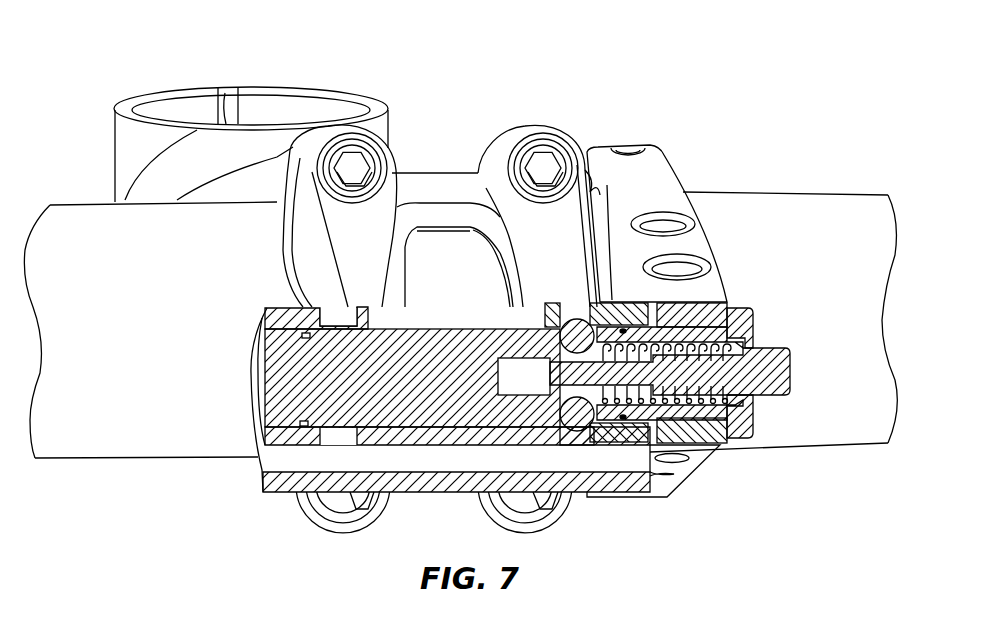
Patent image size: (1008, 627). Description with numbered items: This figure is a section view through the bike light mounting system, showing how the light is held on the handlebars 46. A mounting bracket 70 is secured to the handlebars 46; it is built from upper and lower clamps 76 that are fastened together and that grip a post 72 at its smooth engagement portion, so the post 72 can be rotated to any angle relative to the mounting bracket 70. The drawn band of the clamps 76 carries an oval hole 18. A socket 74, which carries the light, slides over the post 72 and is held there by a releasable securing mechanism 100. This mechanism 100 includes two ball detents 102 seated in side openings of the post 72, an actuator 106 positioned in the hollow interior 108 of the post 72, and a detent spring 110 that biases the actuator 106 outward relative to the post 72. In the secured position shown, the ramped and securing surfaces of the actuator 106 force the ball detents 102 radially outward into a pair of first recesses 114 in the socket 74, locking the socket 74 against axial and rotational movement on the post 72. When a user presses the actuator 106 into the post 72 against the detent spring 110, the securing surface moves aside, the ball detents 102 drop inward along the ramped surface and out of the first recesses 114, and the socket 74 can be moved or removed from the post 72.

The oval hole in band 18 is at (683, 233).
The handlebars 46 is at (783, 207).
The mounting bracket 70 is at (661, 130).
The post 72 is at (283, 395).
The socket 74 is at (280, 310).
The upper and lower clamps 76 is at (667, 178).
The releasable securing mechanism 100 is at (793, 316).
The ball detents 102 is at (577, 320).
The actuator 106 is at (777, 392).
The hollow interior 108 is at (517, 377).
The detent spring 110 is at (703, 345).
The first recesses 114 is at (560, 303).